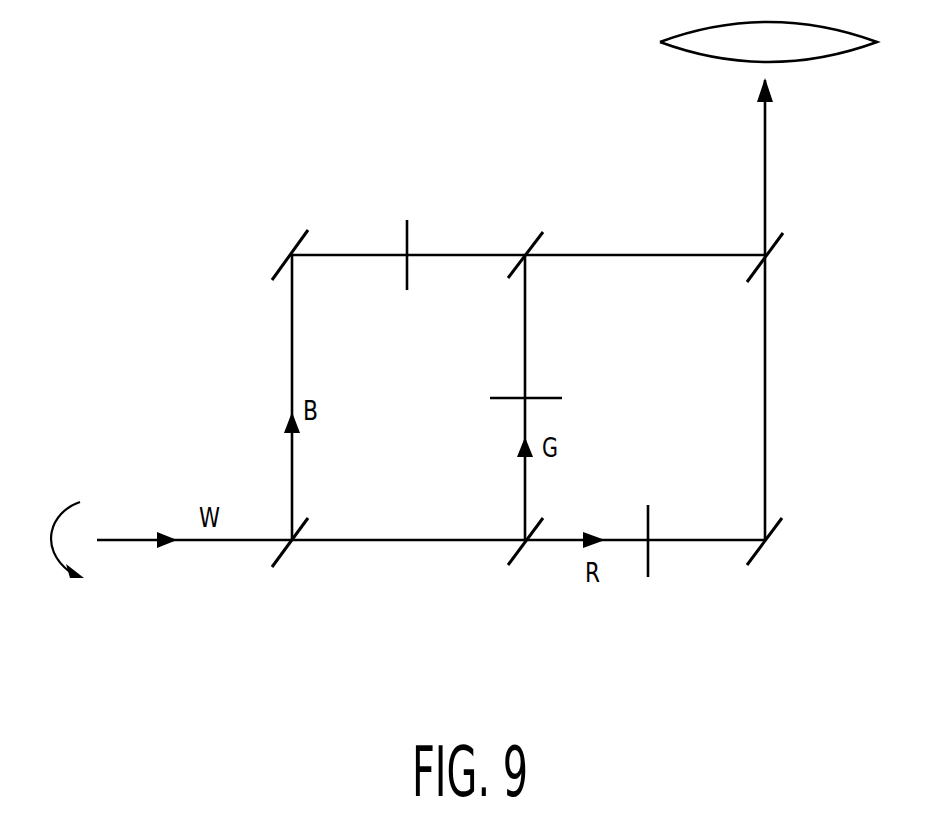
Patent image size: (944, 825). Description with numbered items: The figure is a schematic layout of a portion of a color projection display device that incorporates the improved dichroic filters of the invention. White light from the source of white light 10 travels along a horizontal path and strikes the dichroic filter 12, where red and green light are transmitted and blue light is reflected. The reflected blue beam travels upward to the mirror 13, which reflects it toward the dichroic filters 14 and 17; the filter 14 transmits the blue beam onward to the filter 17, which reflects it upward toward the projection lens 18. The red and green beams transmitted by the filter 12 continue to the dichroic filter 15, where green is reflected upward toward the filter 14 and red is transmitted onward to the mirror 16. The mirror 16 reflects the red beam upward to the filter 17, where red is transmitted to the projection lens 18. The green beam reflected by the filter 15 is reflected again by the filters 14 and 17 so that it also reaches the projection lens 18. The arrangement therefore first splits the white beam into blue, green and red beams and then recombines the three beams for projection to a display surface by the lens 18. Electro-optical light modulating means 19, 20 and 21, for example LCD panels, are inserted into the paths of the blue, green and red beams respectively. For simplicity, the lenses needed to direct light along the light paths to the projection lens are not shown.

The source of white light 10 is at (55, 562).
The dichroic filter 12 is at (285, 553).
The mirror 13 is at (282, 255).
The dichroic filter 14 is at (528, 250).
The dichroic filter 15 is at (515, 562).
The mirror 16 is at (765, 548).
The dichroic filter 17 is at (773, 243).
The projection lens 18 is at (815, 60).
The electro-optical light modulating means 19 is at (412, 230).
The electro-optical light modulating means 20 is at (548, 393).
The electro-optical light modulating means 21 is at (648, 560).